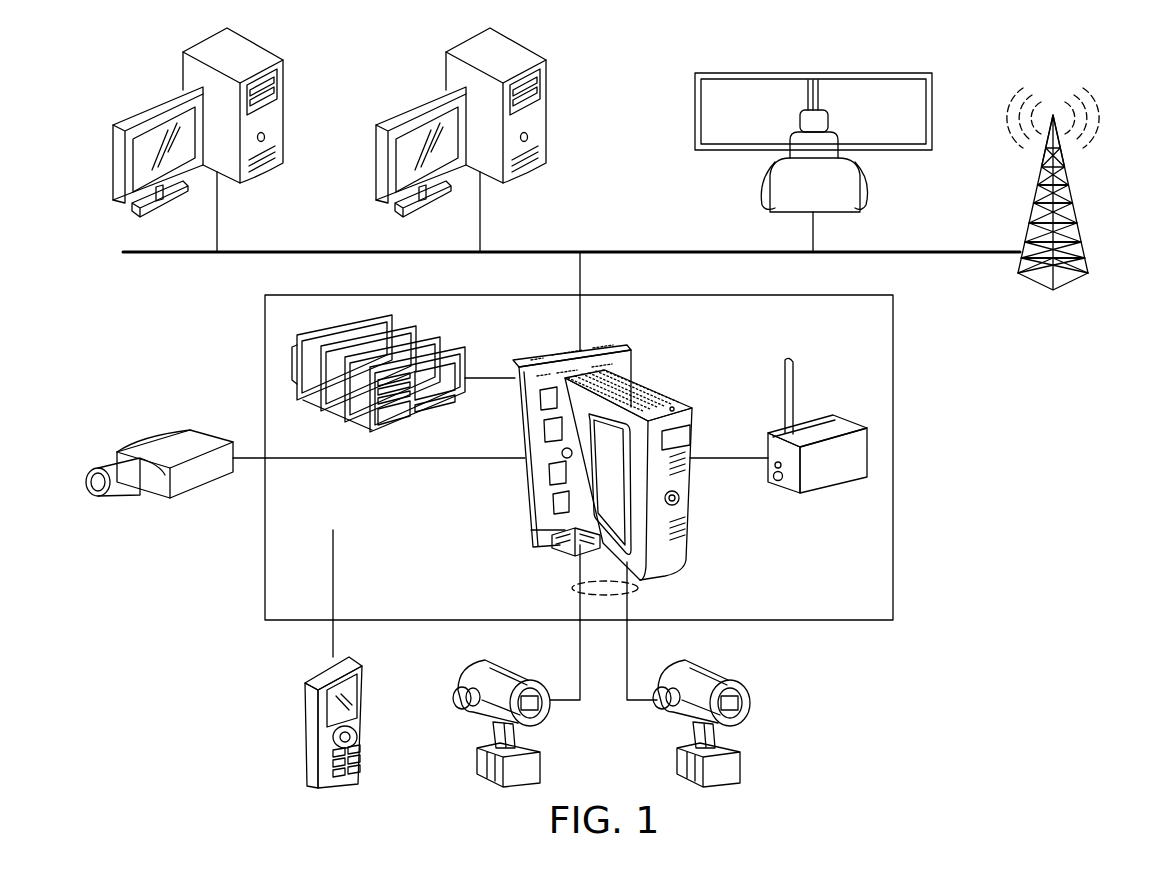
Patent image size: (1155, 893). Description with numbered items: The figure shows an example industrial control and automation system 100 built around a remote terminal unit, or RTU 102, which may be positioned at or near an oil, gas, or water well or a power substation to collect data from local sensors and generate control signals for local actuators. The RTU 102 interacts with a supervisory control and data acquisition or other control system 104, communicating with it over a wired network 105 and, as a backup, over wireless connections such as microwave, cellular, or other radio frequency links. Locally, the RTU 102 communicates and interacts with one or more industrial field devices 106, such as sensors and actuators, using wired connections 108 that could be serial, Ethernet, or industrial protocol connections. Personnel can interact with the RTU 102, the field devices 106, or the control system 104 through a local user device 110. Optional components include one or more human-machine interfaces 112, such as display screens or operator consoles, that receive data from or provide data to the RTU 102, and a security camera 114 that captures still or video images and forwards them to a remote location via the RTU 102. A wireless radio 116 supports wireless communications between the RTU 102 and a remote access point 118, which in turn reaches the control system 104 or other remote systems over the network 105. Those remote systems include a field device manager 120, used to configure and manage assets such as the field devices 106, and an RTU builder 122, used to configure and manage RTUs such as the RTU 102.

The industrial control and automation system 100 is at (1022, 565).
The remote terminal unit (RTU) 102 is at (522, 492).
The control system 104 is at (846, 72).
The wired network 105 is at (650, 250).
The industrial field devices 106 is at (462, 763).
The wired connections 108 is at (575, 588).
The local user device 110 is at (303, 732).
The human-machine interfaces (HMIs) 112 is at (472, 345).
The security camera 114 is at (165, 442).
The wireless radio 116 is at (838, 480).
The remote access point 118 is at (1076, 206).
The field device manager (FDM) 120 is at (151, 79).
The RTU builder 122 is at (414, 79).